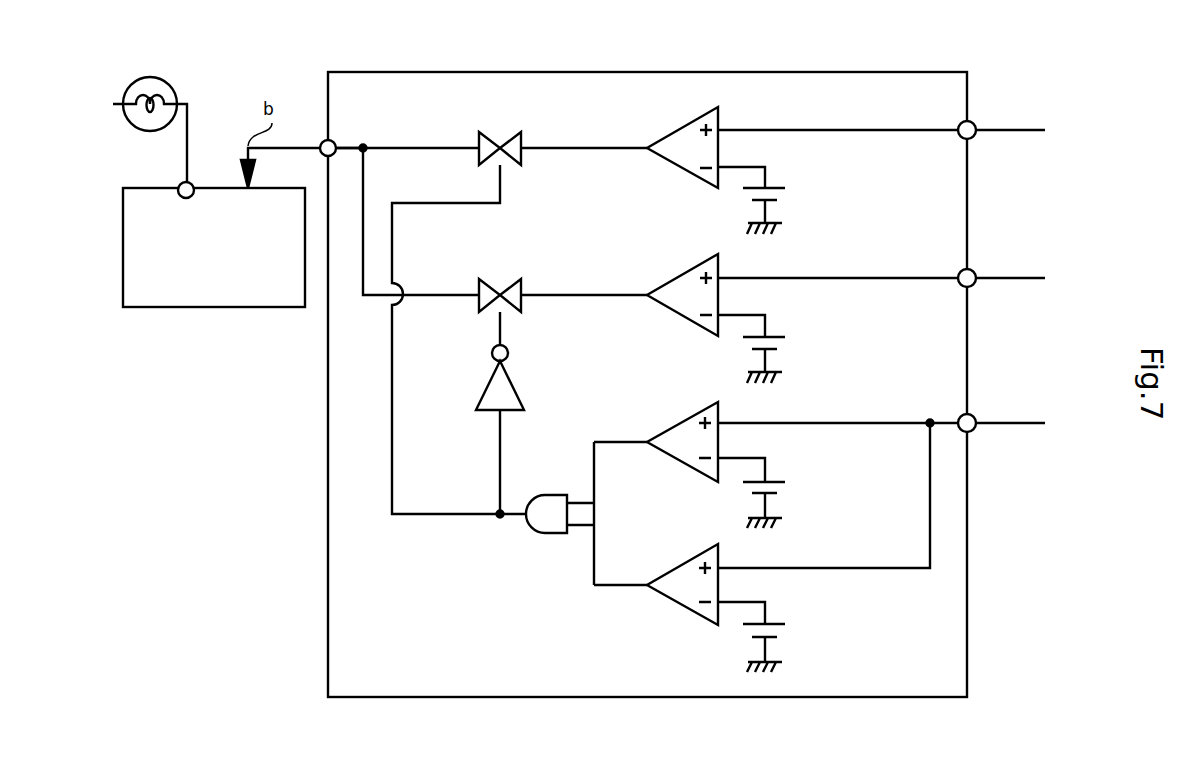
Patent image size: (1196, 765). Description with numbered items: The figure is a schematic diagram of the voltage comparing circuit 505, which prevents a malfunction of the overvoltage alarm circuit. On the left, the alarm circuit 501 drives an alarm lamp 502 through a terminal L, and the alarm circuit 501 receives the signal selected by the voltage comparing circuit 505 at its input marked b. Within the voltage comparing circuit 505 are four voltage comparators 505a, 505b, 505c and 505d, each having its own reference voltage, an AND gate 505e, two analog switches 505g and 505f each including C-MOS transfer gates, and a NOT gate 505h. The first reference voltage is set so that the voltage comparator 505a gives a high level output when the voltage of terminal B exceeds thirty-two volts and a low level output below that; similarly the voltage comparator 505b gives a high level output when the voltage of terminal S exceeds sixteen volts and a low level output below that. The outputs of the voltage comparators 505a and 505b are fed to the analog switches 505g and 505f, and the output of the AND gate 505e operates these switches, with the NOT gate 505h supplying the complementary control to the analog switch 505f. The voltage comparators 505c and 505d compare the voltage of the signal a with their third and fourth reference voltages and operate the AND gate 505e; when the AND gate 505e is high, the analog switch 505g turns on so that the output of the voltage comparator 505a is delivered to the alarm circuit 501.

The alarm circuit 501 is at (218, 313).
The alarm lamp 502 is at (145, 131).
The voltage comparing circuit 505 is at (327, 613).
The voltage comparator 505a is at (660, 135).
The voltage comparator 505b is at (660, 283).
The voltage comparator 505c is at (658, 432).
The voltage comparator 505d is at (677, 607).
The AND gate 505e is at (537, 537).
The analog switch 505f is at (480, 282).
The analog switch 505g is at (480, 134).
The NOT gate 505h is at (478, 411).